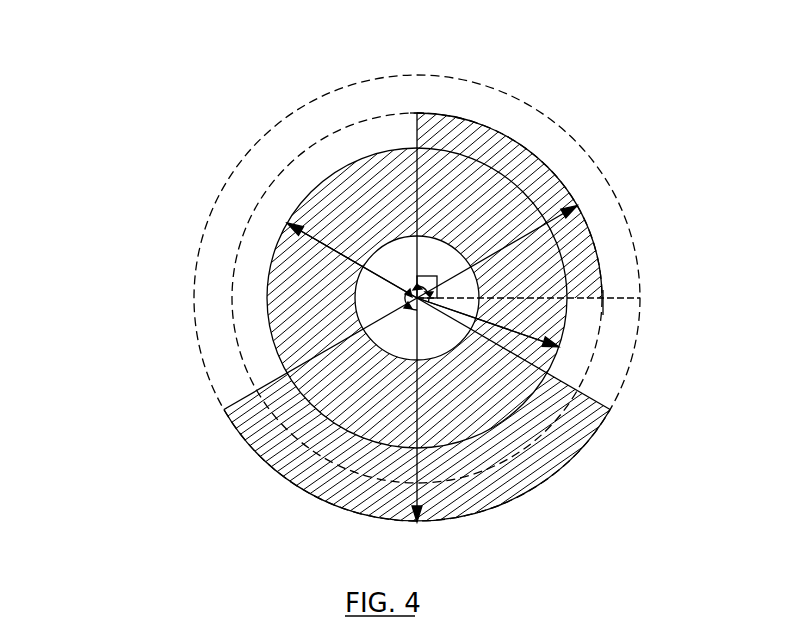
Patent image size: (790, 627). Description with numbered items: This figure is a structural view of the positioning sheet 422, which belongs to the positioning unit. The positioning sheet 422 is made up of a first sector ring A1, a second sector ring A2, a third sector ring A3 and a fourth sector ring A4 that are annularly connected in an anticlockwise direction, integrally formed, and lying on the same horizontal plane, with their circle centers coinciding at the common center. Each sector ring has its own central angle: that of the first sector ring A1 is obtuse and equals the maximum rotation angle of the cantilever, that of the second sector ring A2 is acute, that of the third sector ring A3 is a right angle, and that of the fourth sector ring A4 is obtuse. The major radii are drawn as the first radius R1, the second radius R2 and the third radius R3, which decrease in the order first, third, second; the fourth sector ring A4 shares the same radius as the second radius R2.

The positioning sheet 422 is at (153, 92).
The first sector ring A1 is at (447, 480).
The second sector ring A2 is at (547, 315).
The third sector ring A3 is at (539, 194).
The fourth sector ring A4 is at (331, 223).
The first radius R1 is at (352, 260).
The second radius R2 is at (488, 322).
The third radius R3 is at (497, 252).